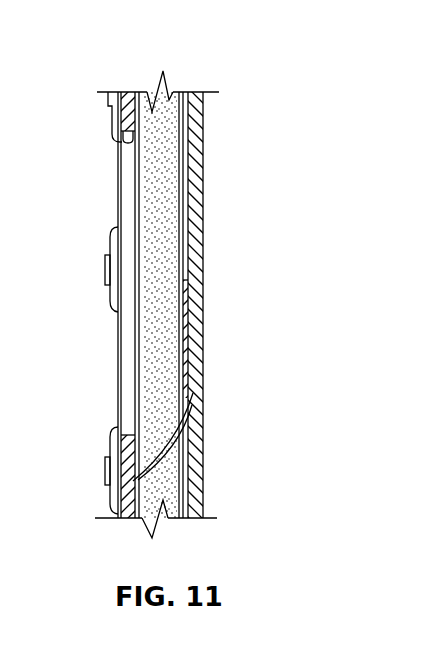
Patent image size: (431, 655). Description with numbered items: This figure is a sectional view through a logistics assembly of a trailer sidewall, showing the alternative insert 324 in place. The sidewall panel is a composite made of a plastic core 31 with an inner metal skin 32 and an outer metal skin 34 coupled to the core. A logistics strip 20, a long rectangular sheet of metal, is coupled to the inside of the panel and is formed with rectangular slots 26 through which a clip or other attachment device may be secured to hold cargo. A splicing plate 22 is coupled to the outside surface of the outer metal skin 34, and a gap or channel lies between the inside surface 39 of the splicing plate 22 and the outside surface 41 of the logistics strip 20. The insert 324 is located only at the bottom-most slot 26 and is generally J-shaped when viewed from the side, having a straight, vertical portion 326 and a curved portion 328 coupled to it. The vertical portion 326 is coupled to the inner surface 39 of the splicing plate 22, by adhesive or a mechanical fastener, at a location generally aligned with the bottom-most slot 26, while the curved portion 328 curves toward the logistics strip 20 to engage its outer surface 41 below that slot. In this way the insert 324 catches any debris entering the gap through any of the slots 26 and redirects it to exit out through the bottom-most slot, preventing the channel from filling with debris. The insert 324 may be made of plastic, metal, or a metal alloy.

The logistics strip 20 is at (106, 384).
The splicing plate 22 is at (212, 118).
The slot 26 is at (120, 143).
The plastic core 31 is at (167, 105).
The inner metal skin 32 is at (136, 103).
The outer metal skin 34 is at (181, 101).
The inside surface of the splicing plate 39 is at (183, 174).
The outside surface of the logistics strip 41 is at (140, 455).
The insert 324 is at (177, 378).
The vertical portion 326 is at (188, 363).
The curved portion 328 is at (182, 475).